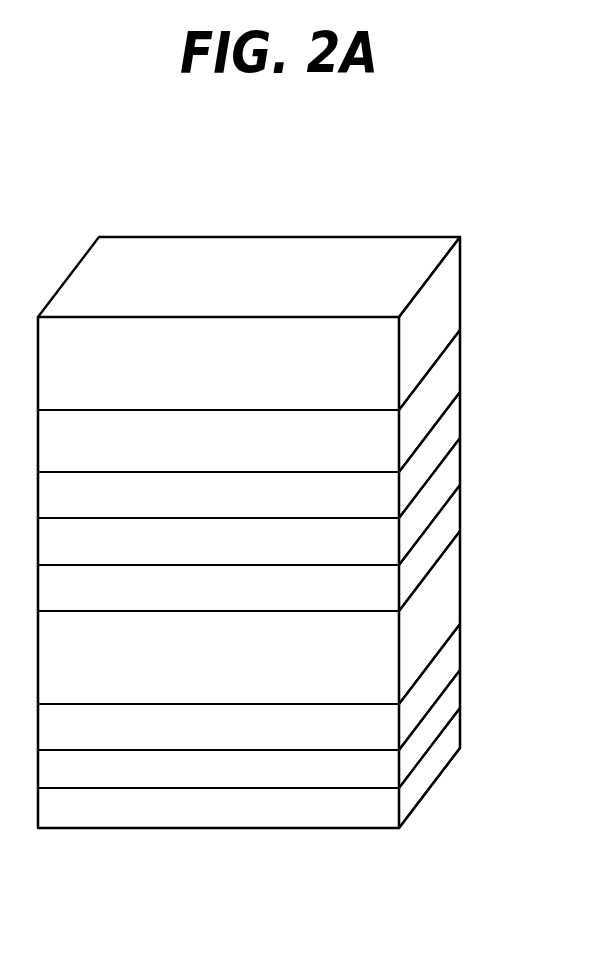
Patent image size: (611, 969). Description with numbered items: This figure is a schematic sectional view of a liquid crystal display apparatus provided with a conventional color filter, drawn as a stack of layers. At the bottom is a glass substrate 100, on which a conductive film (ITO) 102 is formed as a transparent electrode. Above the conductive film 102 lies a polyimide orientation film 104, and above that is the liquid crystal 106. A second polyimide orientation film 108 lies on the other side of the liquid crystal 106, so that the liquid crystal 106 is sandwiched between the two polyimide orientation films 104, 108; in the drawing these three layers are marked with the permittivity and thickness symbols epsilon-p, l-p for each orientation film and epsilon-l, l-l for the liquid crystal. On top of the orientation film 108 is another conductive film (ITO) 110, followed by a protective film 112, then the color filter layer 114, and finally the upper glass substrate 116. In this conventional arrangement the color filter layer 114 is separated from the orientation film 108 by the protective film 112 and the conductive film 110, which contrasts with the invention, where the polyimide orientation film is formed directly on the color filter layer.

The glass substrate 100 is at (450, 741).
The conductive film (ITO) 102 is at (450, 702).
The polyimide orientation film 104 is at (450, 660).
The liquid crystal 106 is at (450, 590).
The polyimide orientation film 108 is at (450, 521).
The conductive film (ITO) 110 is at (450, 474).
The protective film 112 is at (450, 428).
The color filter layer 114 is at (450, 374).
The glass substrate 116 is at (450, 296).